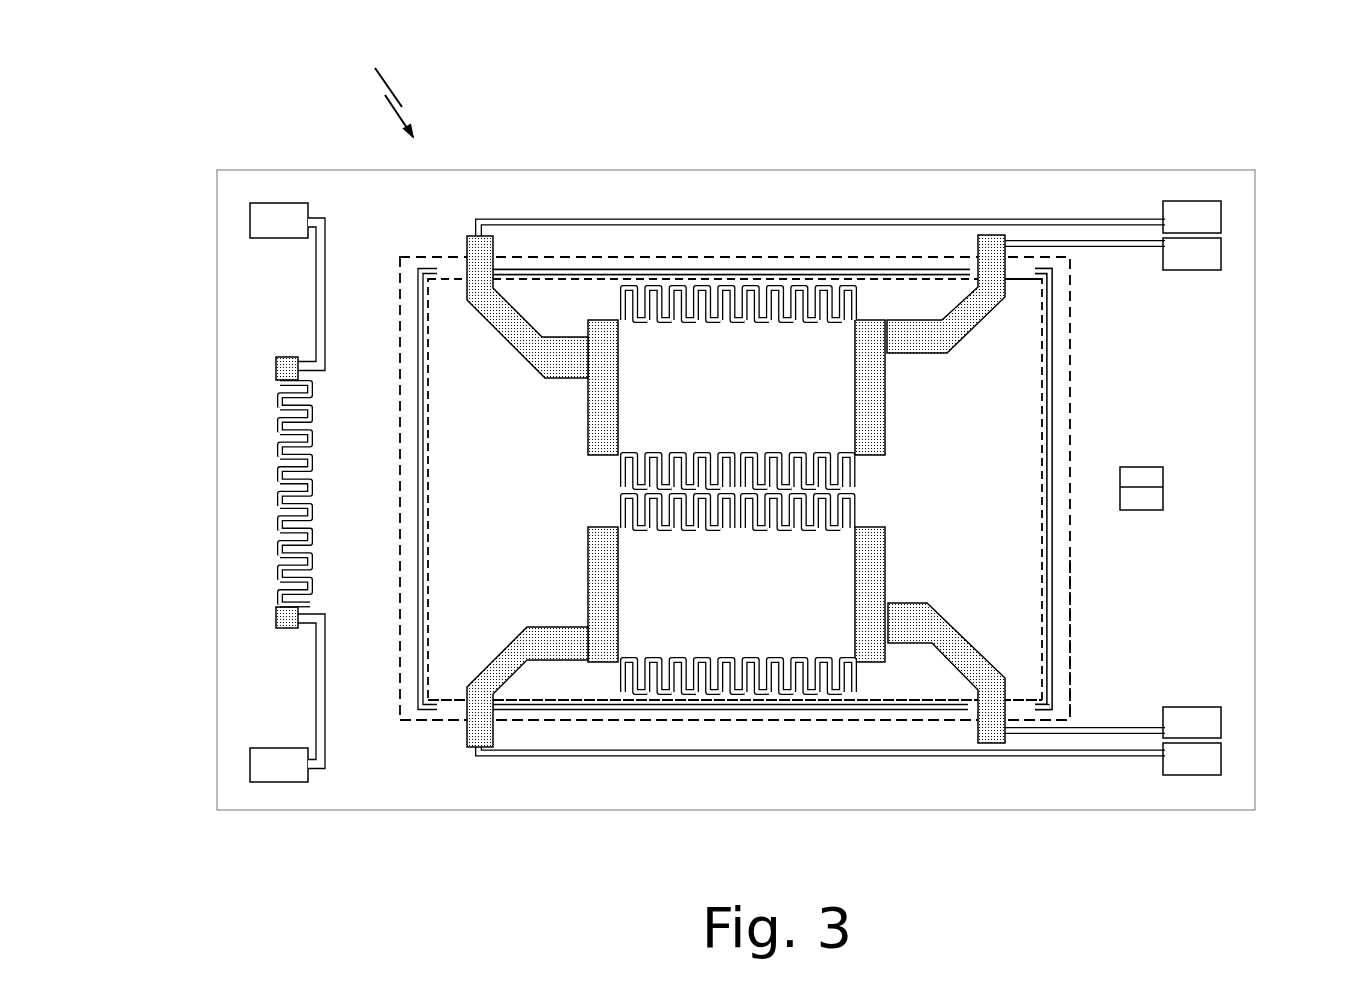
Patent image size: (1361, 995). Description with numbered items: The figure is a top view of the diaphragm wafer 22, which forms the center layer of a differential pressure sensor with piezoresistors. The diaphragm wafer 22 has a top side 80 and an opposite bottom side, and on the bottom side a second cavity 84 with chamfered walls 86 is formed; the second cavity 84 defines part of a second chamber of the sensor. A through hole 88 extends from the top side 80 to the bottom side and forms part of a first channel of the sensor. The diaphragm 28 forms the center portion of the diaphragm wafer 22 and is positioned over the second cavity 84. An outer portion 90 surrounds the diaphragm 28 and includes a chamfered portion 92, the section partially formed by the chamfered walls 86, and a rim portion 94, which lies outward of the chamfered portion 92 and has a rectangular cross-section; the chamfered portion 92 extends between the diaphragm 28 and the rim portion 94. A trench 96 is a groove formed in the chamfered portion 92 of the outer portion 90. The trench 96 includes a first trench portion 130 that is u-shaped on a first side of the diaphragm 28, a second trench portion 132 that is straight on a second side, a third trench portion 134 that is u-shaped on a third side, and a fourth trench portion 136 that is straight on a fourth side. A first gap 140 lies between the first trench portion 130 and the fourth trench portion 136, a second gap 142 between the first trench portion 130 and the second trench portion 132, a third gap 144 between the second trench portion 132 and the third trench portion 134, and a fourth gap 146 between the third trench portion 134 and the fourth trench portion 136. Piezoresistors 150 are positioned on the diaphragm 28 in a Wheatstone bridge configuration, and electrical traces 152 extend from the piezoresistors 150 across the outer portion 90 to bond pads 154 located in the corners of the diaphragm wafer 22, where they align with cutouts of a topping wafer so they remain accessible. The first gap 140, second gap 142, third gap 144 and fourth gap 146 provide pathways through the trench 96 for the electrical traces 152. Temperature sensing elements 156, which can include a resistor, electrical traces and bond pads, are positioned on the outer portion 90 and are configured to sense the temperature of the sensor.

The diaphragm wafer 22 is at (379, 87).
The diaphragm 28 is at (955, 490).
The top side 80 is at (549, 197).
The second cavity 84 is at (990, 383).
The chamfered walls 86 is at (1070, 645).
The through hole 88 is at (1143, 487).
The outer portion 90 is at (1185, 678).
The chamfered portion 92 is at (1065, 614).
The rim portion 94 is at (1222, 548).
The trench 96 is at (722, 270).
The first trench portion 130 is at (1052, 337).
The second trench portion 132 is at (895, 722).
The third trench portion 134 is at (410, 690).
The fourth trench portion 136 is at (607, 280).
The first gap 140 is at (1015, 275).
The second gap 142 is at (1022, 705).
The third gap 144 is at (455, 700).
The fourth gap 146 is at (445, 272).
The piezoresistors 150 is at (795, 285).
The electrical traces 152 is at (918, 218).
The bond pads 154 is at (1195, 217).
The temperature sensing elements 156 is at (240, 510).